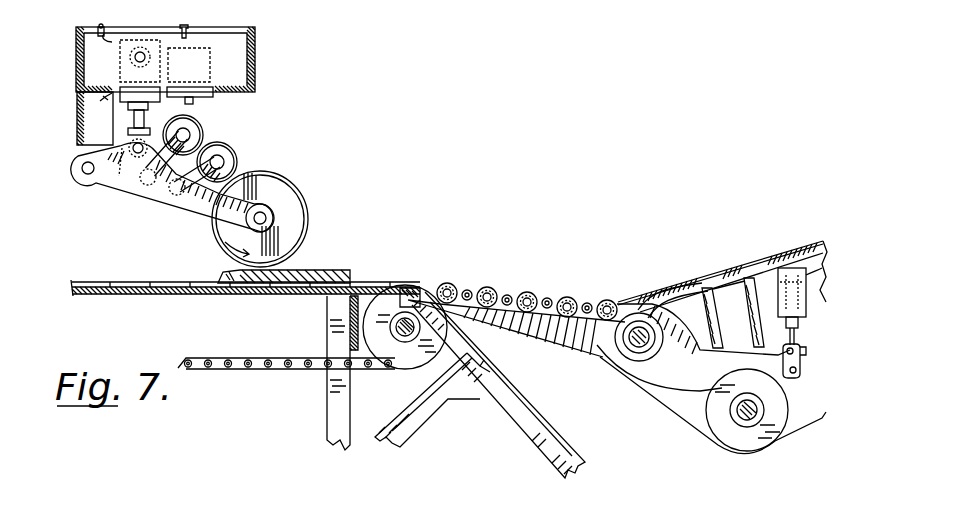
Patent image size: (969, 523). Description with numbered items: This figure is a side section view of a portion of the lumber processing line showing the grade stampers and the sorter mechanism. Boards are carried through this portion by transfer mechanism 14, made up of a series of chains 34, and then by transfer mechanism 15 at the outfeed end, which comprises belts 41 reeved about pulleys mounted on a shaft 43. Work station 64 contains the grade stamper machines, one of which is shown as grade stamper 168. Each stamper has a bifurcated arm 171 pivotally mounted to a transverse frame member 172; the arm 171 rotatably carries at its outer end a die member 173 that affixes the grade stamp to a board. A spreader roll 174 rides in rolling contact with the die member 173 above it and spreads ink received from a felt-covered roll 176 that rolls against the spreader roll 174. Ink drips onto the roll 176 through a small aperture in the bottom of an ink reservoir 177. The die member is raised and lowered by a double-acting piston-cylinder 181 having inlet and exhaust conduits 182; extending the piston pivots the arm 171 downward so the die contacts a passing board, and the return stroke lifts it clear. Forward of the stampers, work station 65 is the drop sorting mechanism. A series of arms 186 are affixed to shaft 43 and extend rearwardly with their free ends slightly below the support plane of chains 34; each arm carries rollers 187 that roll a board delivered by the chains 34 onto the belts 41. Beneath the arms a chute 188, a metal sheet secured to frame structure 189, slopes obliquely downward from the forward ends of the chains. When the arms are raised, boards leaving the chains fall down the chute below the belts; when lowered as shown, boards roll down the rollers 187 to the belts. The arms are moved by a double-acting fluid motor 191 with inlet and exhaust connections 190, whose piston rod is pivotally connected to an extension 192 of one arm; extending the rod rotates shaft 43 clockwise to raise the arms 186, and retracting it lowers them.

The transfer mechanism 14 is at (147, 309).
The transfer mechanism 15 is at (722, 251).
The chains 34 is at (282, 369).
The belts 41 is at (643, 288).
The shaft 43 is at (606, 345).
The work station 64 is at (288, 61).
The work station 65 is at (516, 294).
The grade stamper 168 is at (316, 178).
The bifurcated arm 171 is at (166, 210).
The transverse frame member 172 is at (255, 80).
The die member 173 is at (308, 224).
The spreader roll 174 is at (237, 154).
The felt-covered roll 176 is at (201, 135).
The ink reservoir 177 is at (194, 97).
The piston-cylinder 181 is at (136, 94).
The inlet and exhaust conduits 182 is at (104, 30).
The arms 186 is at (556, 338).
The rollers 187 is at (504, 290).
The chute 188 is at (558, 436).
The frame structure 189 is at (518, 428).
The inlet and exhaust connections 190 is at (798, 300).
The fluid motor 191 is at (820, 356).
The extension 192 is at (700, 375).